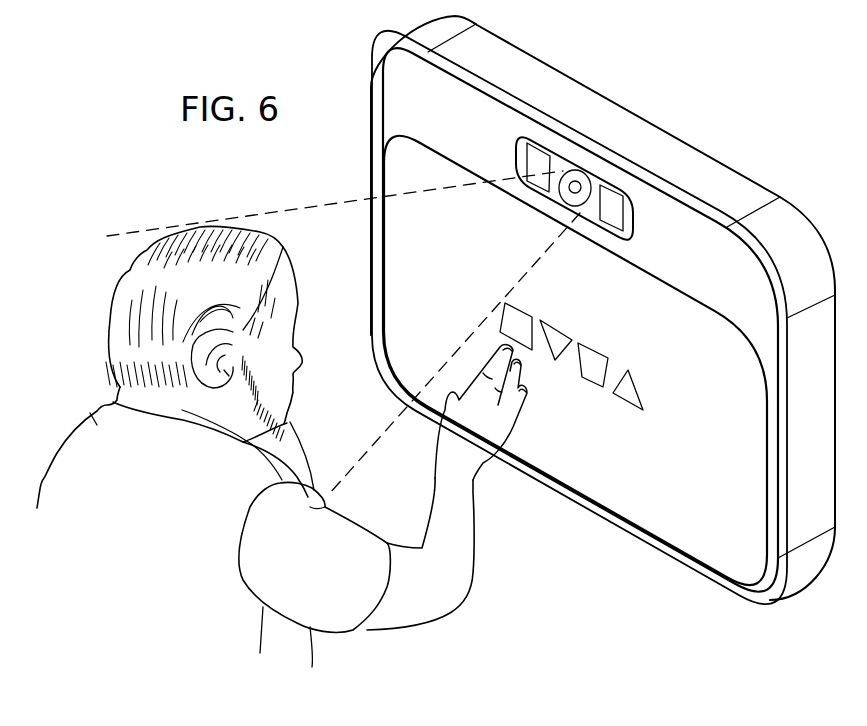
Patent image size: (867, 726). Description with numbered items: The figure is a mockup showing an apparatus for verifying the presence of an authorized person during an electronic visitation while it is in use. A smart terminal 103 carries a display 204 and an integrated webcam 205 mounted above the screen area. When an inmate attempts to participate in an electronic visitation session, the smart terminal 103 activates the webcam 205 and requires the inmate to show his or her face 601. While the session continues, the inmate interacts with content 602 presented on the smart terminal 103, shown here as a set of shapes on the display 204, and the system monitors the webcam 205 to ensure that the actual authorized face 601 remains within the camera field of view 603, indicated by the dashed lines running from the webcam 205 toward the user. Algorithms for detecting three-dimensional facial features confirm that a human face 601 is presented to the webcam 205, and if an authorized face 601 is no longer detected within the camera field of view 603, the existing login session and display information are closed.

The smart terminal 103 is at (683, 139).
The display 204 is at (698, 318).
The webcam 205 is at (515, 152).
The face 601 is at (290, 398).
The content 602 is at (611, 342).
The camera field of view 603 is at (300, 208).